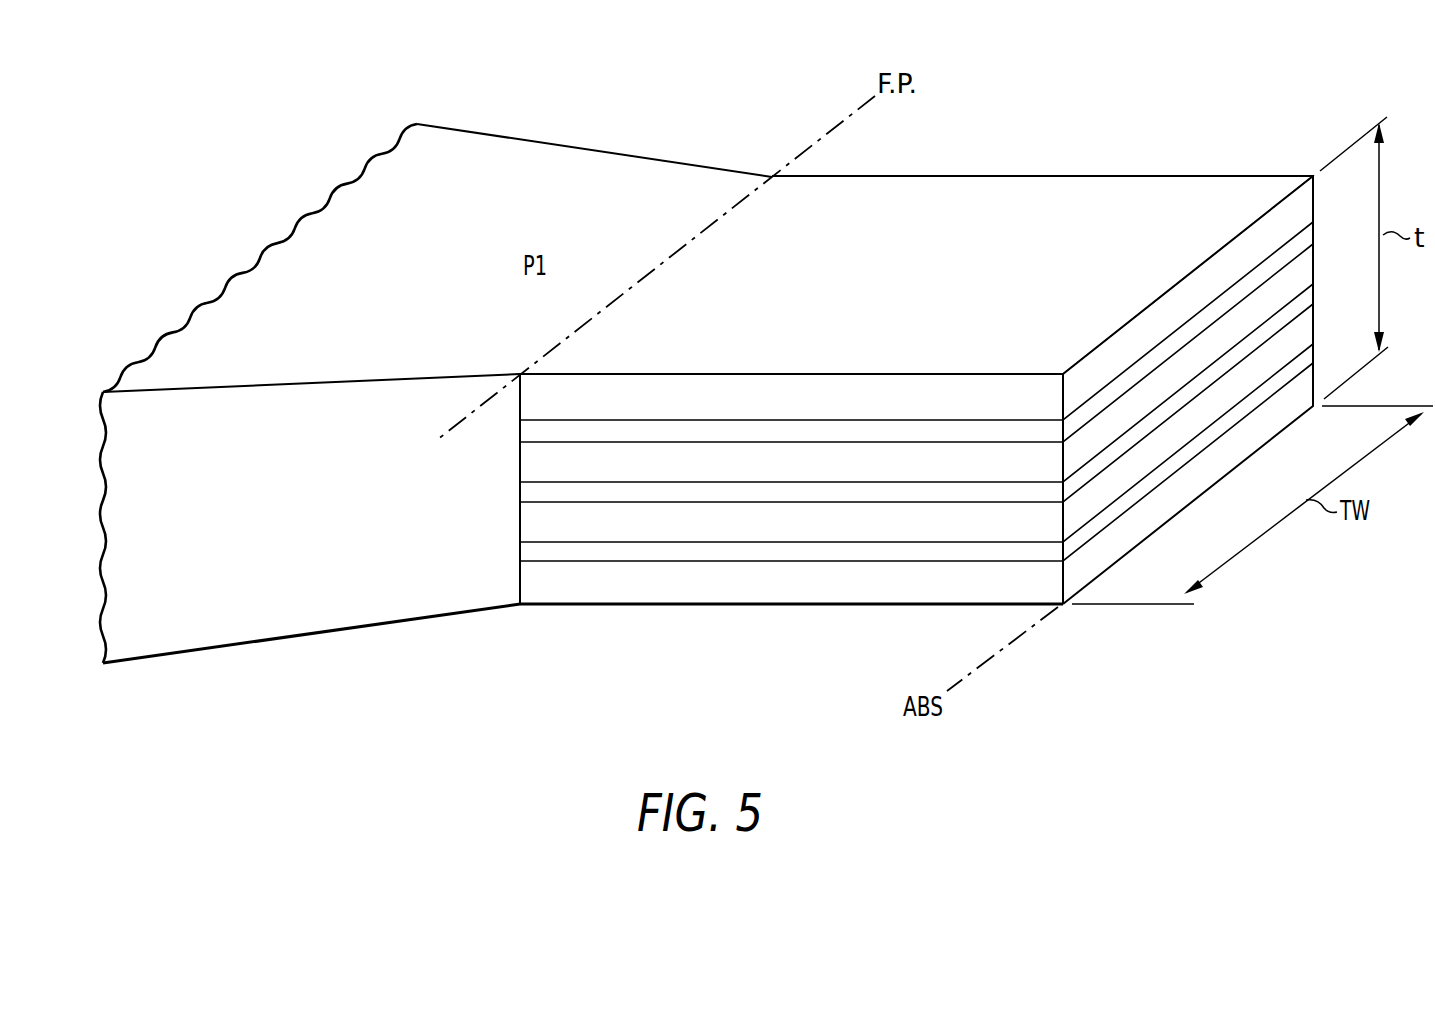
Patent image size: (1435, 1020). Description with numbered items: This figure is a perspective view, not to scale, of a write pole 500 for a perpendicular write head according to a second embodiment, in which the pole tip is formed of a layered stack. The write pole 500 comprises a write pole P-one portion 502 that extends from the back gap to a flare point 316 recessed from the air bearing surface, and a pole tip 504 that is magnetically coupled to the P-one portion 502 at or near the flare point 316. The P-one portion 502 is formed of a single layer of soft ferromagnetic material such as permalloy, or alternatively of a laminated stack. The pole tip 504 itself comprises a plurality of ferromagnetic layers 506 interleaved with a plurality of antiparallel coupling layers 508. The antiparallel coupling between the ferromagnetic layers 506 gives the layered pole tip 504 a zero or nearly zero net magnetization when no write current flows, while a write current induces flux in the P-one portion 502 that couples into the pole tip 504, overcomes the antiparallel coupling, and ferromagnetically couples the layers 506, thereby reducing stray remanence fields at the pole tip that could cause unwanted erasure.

The write pole 500 is at (1044, 679).
The write pole P1 portion 502 is at (527, 205).
The pole tip 504 is at (929, 287).
The ferromagnetic layers 506 is at (809, 412).
The antiparallel coupling layers 508 is at (605, 550).
The flare point 316 is at (820, 140).